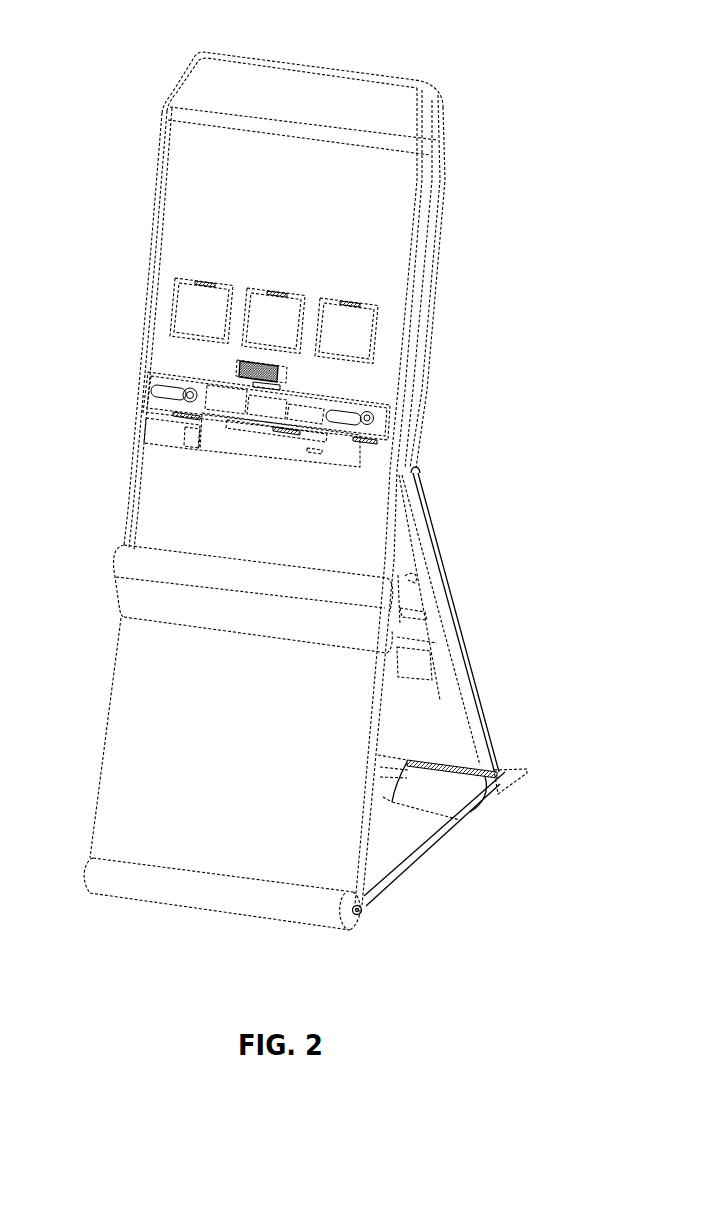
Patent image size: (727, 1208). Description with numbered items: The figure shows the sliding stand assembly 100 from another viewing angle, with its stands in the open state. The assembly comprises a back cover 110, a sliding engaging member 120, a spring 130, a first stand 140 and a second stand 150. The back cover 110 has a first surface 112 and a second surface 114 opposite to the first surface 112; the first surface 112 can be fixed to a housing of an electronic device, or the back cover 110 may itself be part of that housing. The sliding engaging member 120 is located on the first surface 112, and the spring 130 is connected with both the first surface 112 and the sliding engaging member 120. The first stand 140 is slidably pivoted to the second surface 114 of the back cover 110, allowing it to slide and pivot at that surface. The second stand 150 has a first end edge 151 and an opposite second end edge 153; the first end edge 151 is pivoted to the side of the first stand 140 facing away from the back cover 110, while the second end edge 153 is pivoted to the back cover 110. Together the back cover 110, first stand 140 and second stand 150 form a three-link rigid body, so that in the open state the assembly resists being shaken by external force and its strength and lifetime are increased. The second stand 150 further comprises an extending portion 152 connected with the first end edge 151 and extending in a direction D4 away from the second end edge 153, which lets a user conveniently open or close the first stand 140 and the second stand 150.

The sliding stand assembly 100 is at (68, 25).
The back cover 110 is at (367, 225).
The first surface 112 is at (222, 190).
The second surface 114 is at (443, 316).
The sliding engaging member 120 is at (340, 463).
The spring 130 is at (237, 360).
The first stand 140 is at (457, 653).
The second stand 150 is at (417, 860).
The first end edge 151 is at (477, 802).
The extending portion 152 is at (507, 778).
The second end edge 153 is at (390, 895).
The direction D4 is at (530, 768).